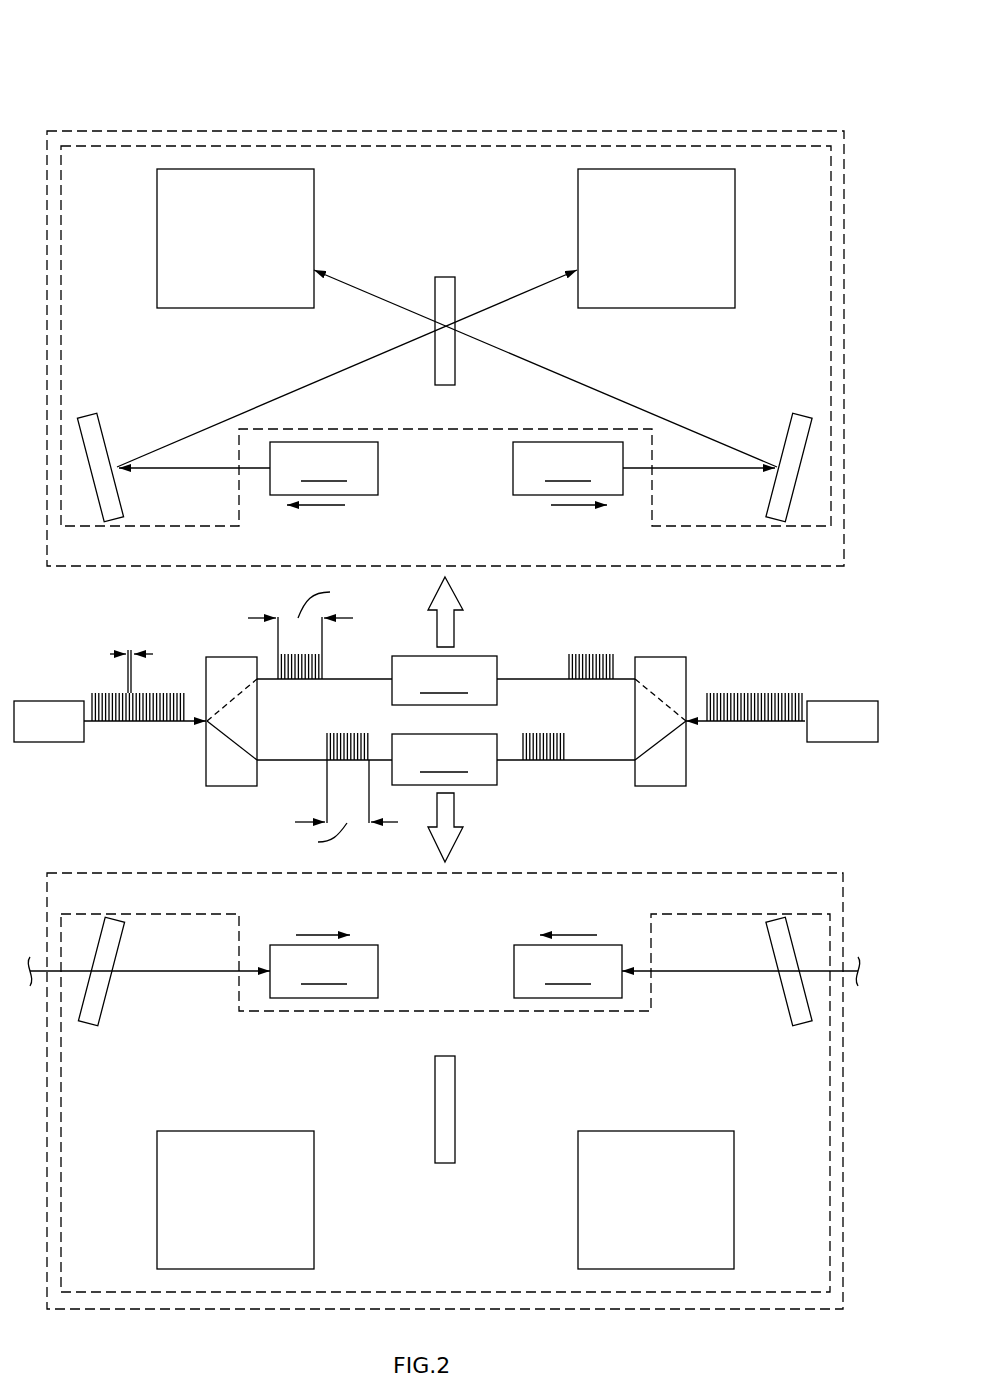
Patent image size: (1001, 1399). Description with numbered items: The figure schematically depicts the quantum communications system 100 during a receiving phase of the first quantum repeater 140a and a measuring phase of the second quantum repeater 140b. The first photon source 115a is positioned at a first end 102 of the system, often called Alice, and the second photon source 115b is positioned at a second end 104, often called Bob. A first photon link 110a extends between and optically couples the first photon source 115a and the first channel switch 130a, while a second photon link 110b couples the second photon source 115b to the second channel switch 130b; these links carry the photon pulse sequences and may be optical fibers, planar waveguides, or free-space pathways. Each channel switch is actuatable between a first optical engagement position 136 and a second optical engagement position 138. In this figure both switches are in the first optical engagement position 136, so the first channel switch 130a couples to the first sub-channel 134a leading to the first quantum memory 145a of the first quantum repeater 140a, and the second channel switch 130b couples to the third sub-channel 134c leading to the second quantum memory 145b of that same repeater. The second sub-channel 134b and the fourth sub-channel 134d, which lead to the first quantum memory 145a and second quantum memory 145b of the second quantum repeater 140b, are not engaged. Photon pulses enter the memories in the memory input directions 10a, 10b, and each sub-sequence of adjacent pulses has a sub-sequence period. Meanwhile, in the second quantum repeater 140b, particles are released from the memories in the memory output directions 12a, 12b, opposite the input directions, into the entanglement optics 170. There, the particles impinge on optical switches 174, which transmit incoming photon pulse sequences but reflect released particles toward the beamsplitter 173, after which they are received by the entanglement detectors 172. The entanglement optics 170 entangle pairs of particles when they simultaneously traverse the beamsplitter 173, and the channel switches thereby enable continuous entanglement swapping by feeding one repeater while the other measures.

The quantum communications system 100 is at (104, 90).
The first end 102 is at (42, 673).
The second end 104 is at (848, 675).
The memory input direction 10a is at (314, 933).
The memory input direction 10b is at (575, 933).
The memory output direction 12a is at (322, 509).
The memory output direction 12b is at (575, 509).
The first photon link 110a is at (95, 722).
The second photon link 110b is at (787, 722).
The first photon source 115a is at (47, 742).
The second photon source 115b is at (843, 742).
The first channel switch 130a is at (233, 657).
The second channel switch 130b is at (658, 657).
The first sub-channel 134a is at (302, 760).
The second sub-channel 134b is at (348, 679).
The third sub-channel 134c is at (587, 760).
The fourth sub-channel 134d is at (542, 679).
The first optical engagement position 136 is at (230, 740).
The second optical engagement position 138 is at (230, 702).
The first quantum repeater 140a is at (843, 1276).
The second quantum repeater 140b is at (844, 164).
The first quantum memory 145a is at (324, 720).
The second quantum memory 145b is at (568, 720).
The entanglement optics 170 is at (831, 202).
The entanglement detector 172 is at (157, 202).
The beamsplitter 173 is at (445, 277).
The optical switch 174 is at (106, 428).